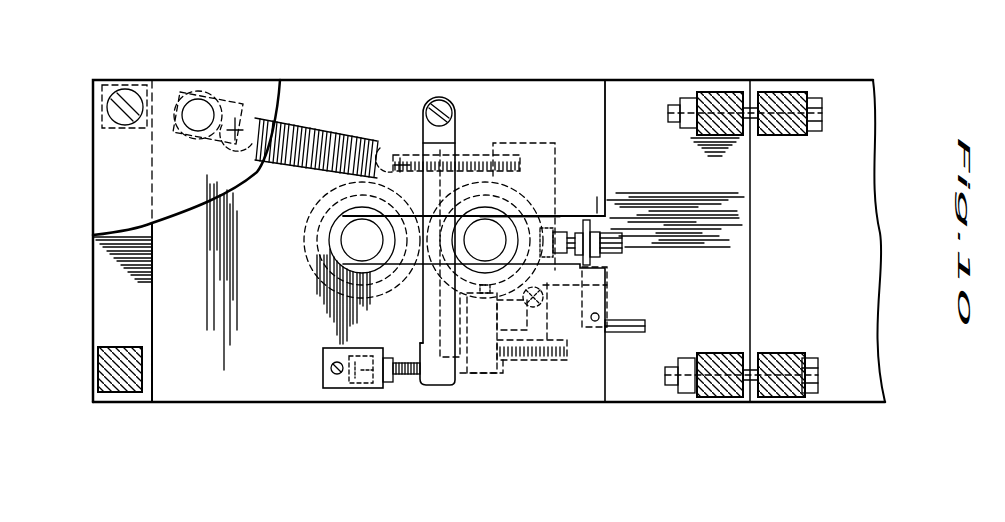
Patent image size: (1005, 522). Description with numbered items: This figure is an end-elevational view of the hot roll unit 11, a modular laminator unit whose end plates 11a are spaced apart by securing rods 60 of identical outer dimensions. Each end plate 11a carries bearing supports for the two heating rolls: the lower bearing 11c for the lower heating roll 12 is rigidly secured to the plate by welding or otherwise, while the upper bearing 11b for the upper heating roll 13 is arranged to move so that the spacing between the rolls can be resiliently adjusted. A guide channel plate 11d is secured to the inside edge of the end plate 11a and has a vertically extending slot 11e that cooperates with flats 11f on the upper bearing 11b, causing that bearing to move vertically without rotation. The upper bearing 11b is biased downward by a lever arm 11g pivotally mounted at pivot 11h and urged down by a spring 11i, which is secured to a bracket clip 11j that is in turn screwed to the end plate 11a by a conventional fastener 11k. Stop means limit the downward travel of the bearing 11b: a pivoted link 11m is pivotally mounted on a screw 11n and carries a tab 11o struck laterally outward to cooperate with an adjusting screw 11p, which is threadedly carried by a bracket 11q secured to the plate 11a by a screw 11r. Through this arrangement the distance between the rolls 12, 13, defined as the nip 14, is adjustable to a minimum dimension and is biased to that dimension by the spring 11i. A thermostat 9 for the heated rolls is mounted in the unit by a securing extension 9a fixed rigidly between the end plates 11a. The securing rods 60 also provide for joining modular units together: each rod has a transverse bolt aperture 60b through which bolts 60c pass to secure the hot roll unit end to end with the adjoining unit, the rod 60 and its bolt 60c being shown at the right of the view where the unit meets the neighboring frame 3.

The machine frame 3 is at (859, 286).
The thermostat 9 is at (600, 232).
The securing extension 9a is at (640, 323).
The hot roll unit 11 is at (183, 380).
The end plates 11a is at (396, 80).
The upper bearings 11b is at (460, 253).
The lower bearings 11c is at (329, 242).
The guide channel plate 11d is at (532, 97).
The vertically extending slot 11e is at (443, 96).
The flats 11f is at (500, 217).
The lever arm 11g is at (548, 143).
The pivot 11h is at (597, 197).
The springs 11i is at (323, 124).
The bracket clips 11j is at (200, 95).
The fastener 11k is at (187, 135).
The pivoted links 11m is at (456, 147).
The screws 11n is at (607, 285).
The tab 11o is at (423, 388).
The adjusting screw 11p is at (404, 376).
The brackets 11q is at (373, 388).
The screw 11r is at (330, 370).
The lower heating roll 12 is at (315, 222).
The upper heating roll 13 is at (448, 213).
The nip 14 is at (418, 244).
The securing rods 60 is at (124, 86).
The transverse bolt aperture 60b is at (787, 134).
The bolts 60c is at (822, 124).